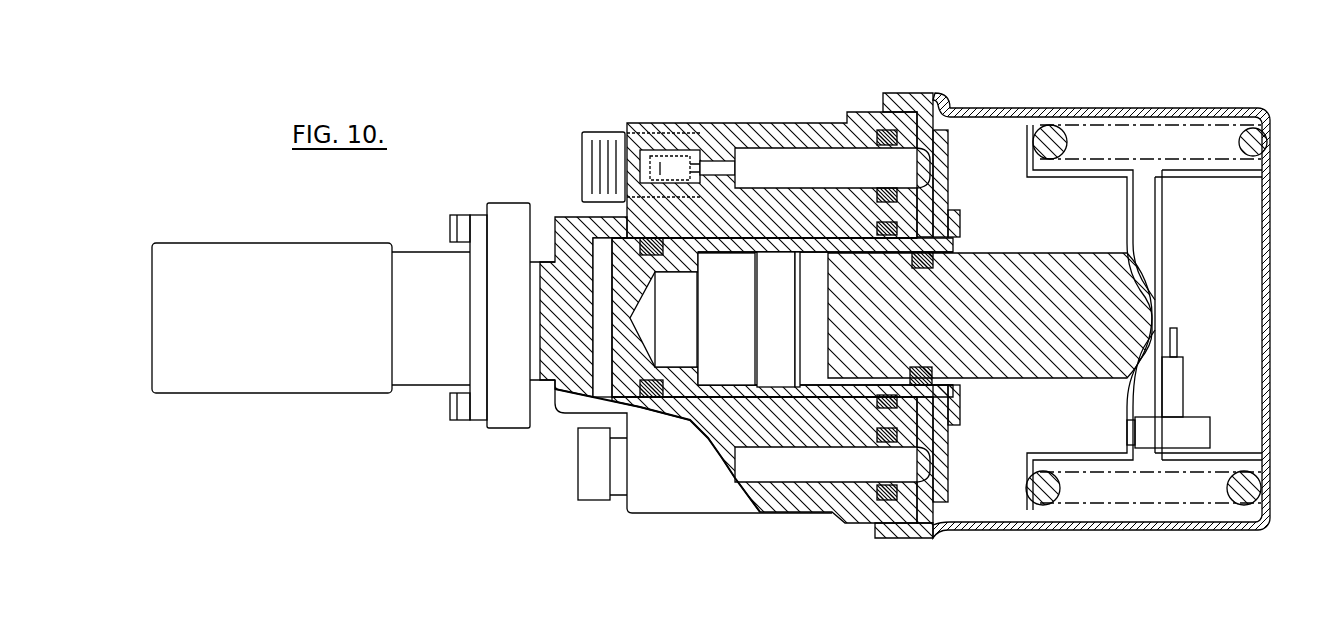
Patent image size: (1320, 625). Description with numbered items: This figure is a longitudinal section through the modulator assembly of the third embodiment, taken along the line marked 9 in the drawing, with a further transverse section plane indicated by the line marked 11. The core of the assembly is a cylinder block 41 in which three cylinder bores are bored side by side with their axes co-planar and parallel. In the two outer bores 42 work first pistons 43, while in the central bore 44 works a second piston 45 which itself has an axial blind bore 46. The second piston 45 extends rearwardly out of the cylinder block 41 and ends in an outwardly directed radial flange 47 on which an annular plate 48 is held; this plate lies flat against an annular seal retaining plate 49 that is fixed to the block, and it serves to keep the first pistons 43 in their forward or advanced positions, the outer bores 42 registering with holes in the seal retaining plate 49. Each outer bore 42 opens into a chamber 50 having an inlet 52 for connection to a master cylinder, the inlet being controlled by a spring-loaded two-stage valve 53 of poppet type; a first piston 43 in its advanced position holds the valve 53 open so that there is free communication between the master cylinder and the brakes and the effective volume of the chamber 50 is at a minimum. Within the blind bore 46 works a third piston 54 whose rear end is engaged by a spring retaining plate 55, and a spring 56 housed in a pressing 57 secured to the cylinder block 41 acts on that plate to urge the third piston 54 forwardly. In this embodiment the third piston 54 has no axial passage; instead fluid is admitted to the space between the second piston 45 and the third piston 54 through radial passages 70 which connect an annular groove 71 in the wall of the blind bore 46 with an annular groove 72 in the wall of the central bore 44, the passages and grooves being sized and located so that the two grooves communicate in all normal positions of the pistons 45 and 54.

The section line 9- 9 is at (123, 315).
The section line 11- 11 is at (812, 0).
The cylinder block 41 is at (668, 492).
The outer bore 42 is at (846, 148).
The first piston 43 is at (850, 174).
The central bore 44 is at (605, 404).
The second piston 45 is at (578, 223).
The axial blind bore 46 is at (676, 319).
The radial flange 47 is at (960, 221).
The annular plate 48 is at (946, 449).
The seal retaining plate 49 is at (928, 514).
The chamber 50 is at (740, 146).
The inlet 52 is at (580, 153).
The two-stage valve 53 is at (705, 150).
The third piston 54 is at (1040, 268).
The spring retaining plate 55 is at (1030, 498).
The spring 56 is at (1242, 493).
The pressing 57 is at (1077, 526).
The radial passage 70 is at (773, 240).
The annular groove 71 is at (758, 240).
The annular groove 72 is at (822, 240).